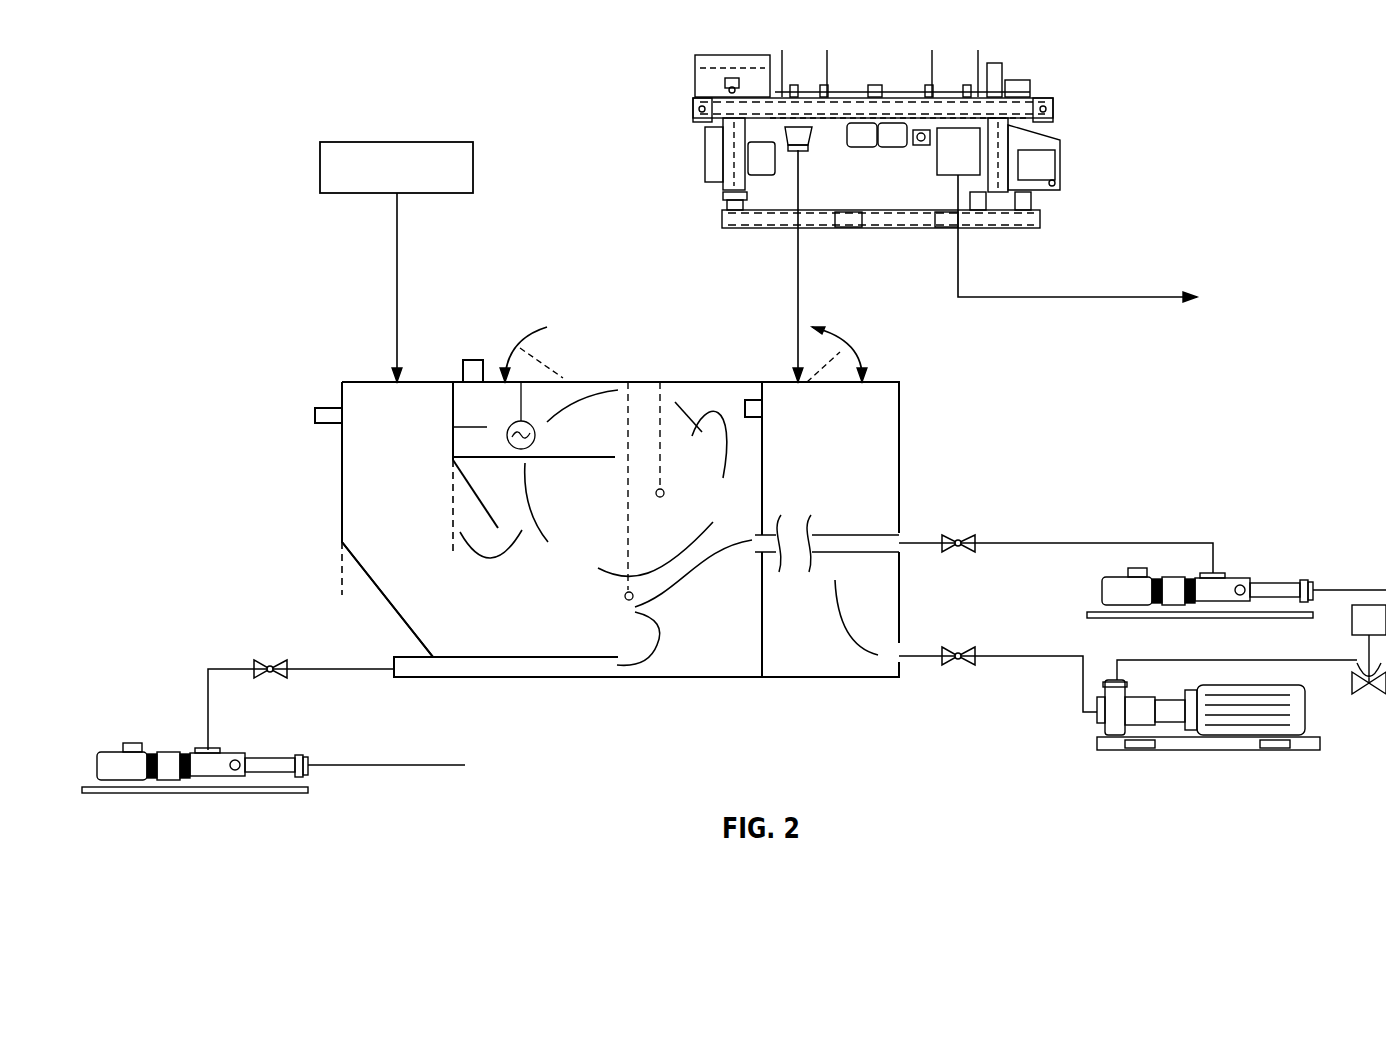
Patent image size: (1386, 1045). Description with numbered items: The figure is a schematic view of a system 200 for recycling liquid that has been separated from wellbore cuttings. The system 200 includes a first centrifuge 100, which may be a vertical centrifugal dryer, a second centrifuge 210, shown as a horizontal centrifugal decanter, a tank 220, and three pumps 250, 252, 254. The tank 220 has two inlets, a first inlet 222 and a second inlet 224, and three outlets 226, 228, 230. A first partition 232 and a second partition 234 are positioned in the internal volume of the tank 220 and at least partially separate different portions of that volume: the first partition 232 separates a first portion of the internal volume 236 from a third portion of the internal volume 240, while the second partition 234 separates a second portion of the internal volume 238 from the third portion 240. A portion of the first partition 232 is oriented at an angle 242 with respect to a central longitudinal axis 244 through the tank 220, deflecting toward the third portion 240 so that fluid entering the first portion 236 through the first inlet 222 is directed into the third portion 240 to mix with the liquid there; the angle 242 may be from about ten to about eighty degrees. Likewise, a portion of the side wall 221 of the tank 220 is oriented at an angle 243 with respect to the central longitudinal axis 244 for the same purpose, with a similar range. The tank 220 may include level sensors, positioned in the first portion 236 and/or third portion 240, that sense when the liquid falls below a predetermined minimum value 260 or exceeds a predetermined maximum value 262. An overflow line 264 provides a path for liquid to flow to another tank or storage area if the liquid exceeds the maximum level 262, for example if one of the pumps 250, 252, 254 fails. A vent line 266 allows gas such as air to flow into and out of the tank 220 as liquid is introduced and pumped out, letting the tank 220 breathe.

The first centrifuge 100 is at (398, 140).
The system 200 is at (238, 72).
The second centrifuge 210 is at (1060, 113).
The tank 220 is at (342, 482).
The side wall 221 is at (413, 628).
The first inlet 222 is at (397, 287).
The second inlet 224 is at (798, 312).
The first outlet 226 is at (902, 543).
The second outlet 228 is at (394, 660).
The third outlet 230 is at (902, 615).
The first partition 232 is at (453, 418).
The second partition 234 is at (762, 620).
The first portion of the internal volume 236 is at (420, 546).
The second portion of the internal volume 238 is at (878, 500).
The third portion of the internal volume 240 is at (603, 558).
The angle 242 is at (467, 488).
The angle 243 is at (387, 600).
The central longitudinal axis 244 is at (453, 475).
The pump 250 is at (1113, 592).
The pump 252 is at (130, 742).
The pump 254 is at (1097, 712).
The predetermined minimum value 260 is at (583, 618).
The predetermined maximum value 262 is at (728, 513).
The overflow line 264 is at (330, 408).
The vent line 266 is at (470, 360).